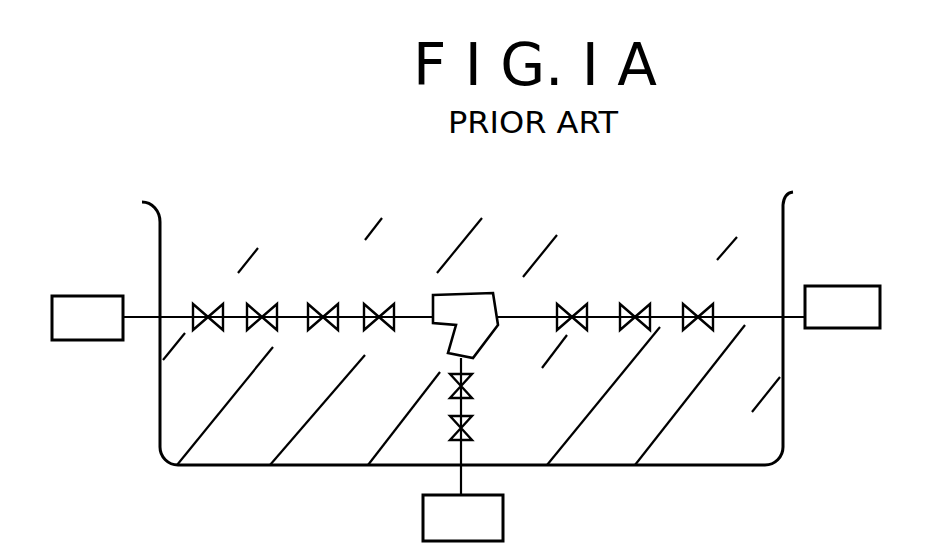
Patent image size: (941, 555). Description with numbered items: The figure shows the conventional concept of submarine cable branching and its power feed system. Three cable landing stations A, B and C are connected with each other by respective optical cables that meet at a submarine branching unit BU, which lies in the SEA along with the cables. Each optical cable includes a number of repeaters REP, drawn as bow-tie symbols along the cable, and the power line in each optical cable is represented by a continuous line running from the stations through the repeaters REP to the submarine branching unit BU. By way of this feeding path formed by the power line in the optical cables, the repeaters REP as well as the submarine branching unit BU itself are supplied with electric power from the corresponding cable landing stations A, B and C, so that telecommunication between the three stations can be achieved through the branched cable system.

The cable landing station A is at (87, 318).
The cable landing station B is at (463, 518).
The cable landing station C is at (842, 307).
The submarine branching unit BU is at (465, 325).
The repeater REP is at (453, 351).
The sea SEA is at (467, 328).